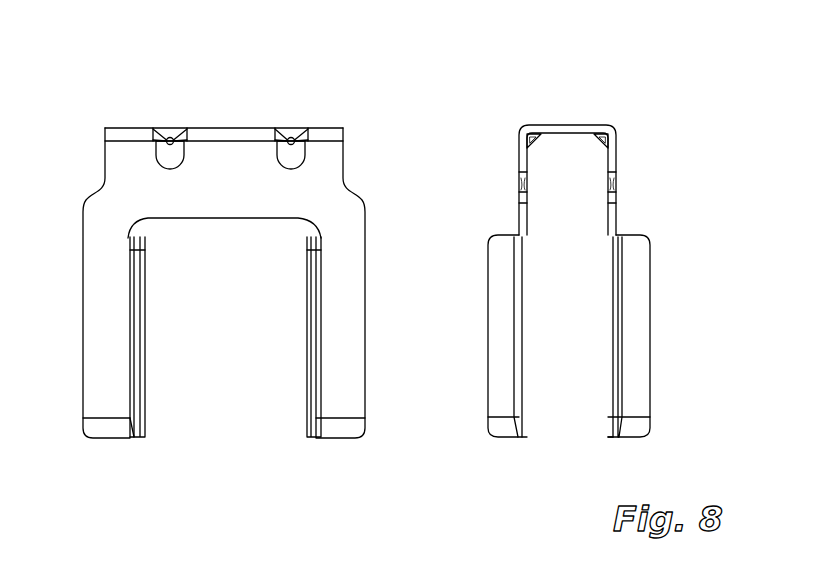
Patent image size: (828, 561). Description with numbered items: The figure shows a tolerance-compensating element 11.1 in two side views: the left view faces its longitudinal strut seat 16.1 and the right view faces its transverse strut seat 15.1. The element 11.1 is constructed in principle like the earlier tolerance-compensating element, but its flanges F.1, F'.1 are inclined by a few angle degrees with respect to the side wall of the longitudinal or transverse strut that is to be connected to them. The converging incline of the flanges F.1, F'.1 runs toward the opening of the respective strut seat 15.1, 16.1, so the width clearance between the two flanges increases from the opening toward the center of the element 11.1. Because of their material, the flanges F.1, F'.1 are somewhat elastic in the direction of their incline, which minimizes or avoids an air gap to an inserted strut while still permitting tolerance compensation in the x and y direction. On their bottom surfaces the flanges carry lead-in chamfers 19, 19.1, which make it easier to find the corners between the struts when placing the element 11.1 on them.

The tolerance-compensating element 11.1 is at (205, 117).
The flange F.1 is at (128, 317).
The flange F'.1 is at (376, 349).
The longitudinal strut seat 16.1 is at (260, 345).
The transverse strut seat 15.1 is at (595, 295).
The lead-in chamfer 19.1 is at (129, 439).
The lead-in chamfer 19 is at (625, 433).